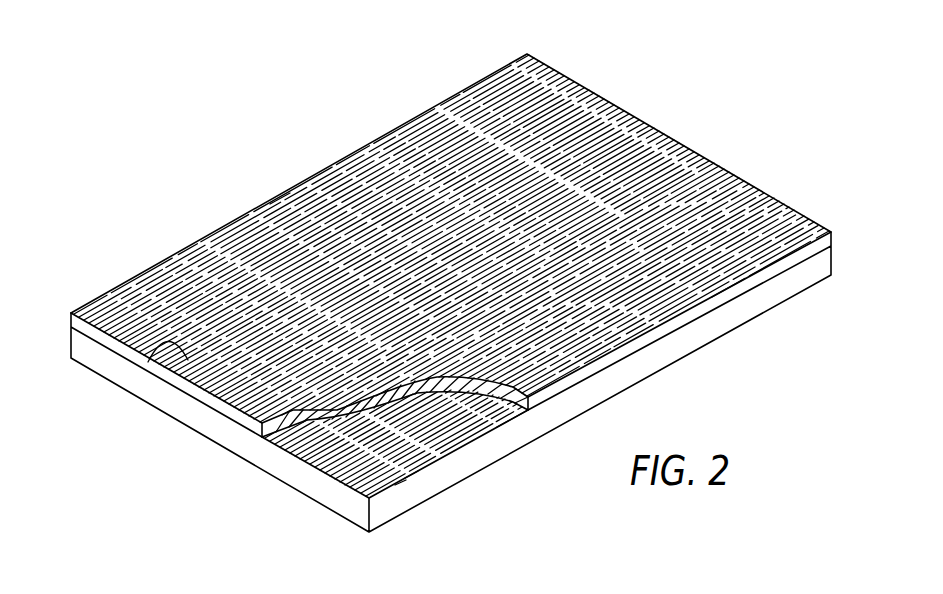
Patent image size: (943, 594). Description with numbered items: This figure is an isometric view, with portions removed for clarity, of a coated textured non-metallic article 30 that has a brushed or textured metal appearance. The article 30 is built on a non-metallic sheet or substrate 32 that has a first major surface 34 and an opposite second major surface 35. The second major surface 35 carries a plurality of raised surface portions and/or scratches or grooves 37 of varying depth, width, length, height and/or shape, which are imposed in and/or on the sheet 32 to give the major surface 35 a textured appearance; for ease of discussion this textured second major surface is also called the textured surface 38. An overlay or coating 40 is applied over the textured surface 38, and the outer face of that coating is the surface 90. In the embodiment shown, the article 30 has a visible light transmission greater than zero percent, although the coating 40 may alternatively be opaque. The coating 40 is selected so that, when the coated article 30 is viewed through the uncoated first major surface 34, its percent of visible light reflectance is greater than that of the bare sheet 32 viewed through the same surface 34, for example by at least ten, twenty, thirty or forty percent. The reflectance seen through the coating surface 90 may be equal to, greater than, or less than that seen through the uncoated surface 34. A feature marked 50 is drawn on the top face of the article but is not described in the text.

The coated textured non-metallic article 30 is at (451, 281).
The non-metallic sheet or substrate 32 is at (782, 288).
The first major surface 34 is at (240, 458).
The second major surface 35 is at (440, 433).
The raised surface portions and/or scratches or grooves 37 is at (400, 481).
The textured surface 38 is at (523, 417).
The overlay or coating 40 is at (585, 98).
The surface feature 50 is at (157, 357).
The surface of the coating 90 is at (270, 204).